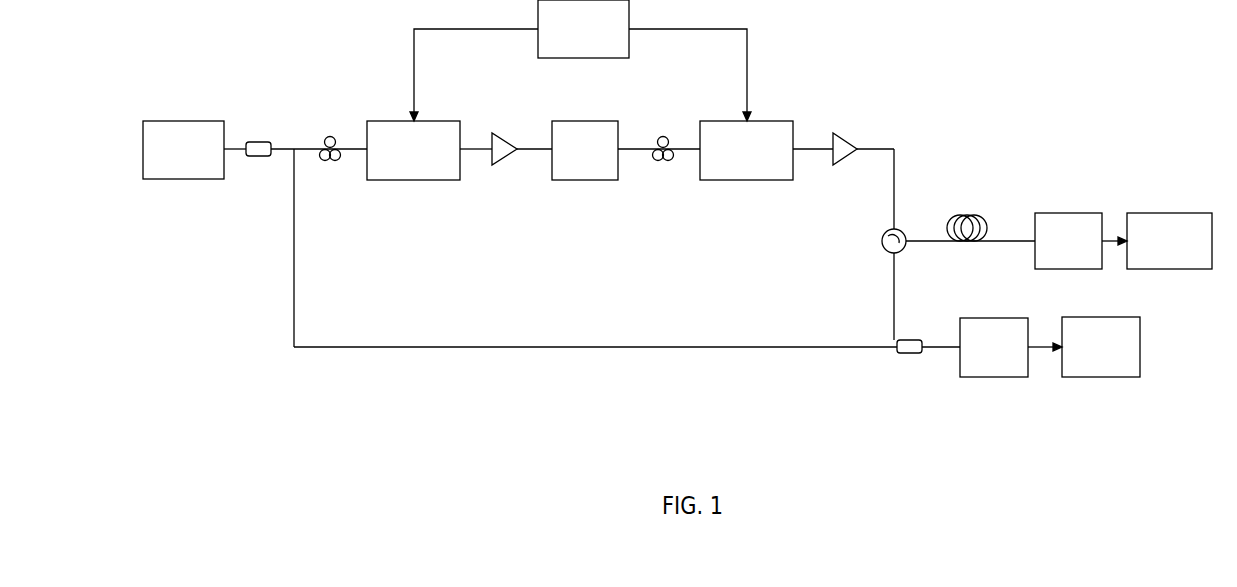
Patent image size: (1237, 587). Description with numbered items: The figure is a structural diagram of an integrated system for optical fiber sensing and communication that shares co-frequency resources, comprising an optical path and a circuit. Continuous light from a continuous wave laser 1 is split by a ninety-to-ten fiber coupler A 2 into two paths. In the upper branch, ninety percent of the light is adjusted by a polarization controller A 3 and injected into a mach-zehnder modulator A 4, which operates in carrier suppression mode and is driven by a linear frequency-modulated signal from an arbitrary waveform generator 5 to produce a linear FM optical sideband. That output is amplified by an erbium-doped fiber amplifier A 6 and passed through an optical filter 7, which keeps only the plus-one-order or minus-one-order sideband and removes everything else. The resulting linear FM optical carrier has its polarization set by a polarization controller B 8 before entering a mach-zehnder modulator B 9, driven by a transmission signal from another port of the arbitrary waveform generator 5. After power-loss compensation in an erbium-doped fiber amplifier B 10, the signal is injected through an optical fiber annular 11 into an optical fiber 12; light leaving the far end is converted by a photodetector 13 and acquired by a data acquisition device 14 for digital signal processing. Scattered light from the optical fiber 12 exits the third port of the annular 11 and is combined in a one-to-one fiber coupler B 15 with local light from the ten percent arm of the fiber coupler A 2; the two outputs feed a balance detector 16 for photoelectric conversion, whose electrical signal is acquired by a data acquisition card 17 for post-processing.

The continuous wave laser 1 is at (183, 162).
The fiber coupler A 2 is at (254, 132).
The polarization controller A 3 is at (325, 126).
The mach-zehnder modulator A 4 is at (413, 162).
The arbitrary waveform generator 5 is at (583, 42).
The erbium-doped fiber amplifier A 6 is at (501, 139).
The optical filter 7 is at (585, 162).
The polarization controller B 8 is at (656, 139).
The mach-zehnder modulator B 9 is at (746, 162).
The erbium-doped fiber amplifier B 10 is at (837, 139).
The optical fiber annular 11 is at (860, 243).
The optical fiber 12 is at (965, 227).
The photodetector 13 is at (1068, 254).
The data acquisition device 14 is at (1169, 254).
The fiber coupler B 15 is at (911, 356).
The balance detector 16 is at (994, 359).
The data acquisition card 17 is at (1101, 359).